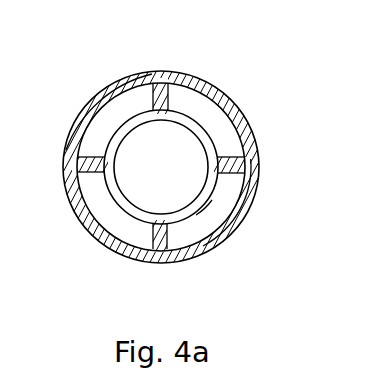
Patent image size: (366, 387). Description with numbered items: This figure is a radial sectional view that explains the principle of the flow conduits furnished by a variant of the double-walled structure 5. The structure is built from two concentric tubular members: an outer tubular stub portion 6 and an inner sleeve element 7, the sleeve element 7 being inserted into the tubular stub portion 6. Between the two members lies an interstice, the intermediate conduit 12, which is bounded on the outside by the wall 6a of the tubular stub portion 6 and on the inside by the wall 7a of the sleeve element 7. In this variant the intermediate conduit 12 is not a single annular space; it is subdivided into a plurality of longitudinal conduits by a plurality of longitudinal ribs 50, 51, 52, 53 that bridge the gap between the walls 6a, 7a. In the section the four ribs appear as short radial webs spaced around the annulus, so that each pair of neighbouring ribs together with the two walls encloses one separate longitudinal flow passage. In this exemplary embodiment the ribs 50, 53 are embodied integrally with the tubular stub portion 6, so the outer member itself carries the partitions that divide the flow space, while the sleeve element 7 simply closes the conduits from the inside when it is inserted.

The double-walled structure 5 is at (277, 209).
The tubular stub portion 6 is at (236, 110).
The wall 6a is at (236, 194).
The sleeve element 7 is at (117, 192).
The wall 7a is at (210, 203).
The intermediate conduit 12 is at (150, 243).
The longitudinal rib 50 is at (72, 153).
The longitudinal rib 51 is at (169, 230).
The longitudinal rib 52 is at (244, 157).
The longitudinal rib 53 is at (162, 88).